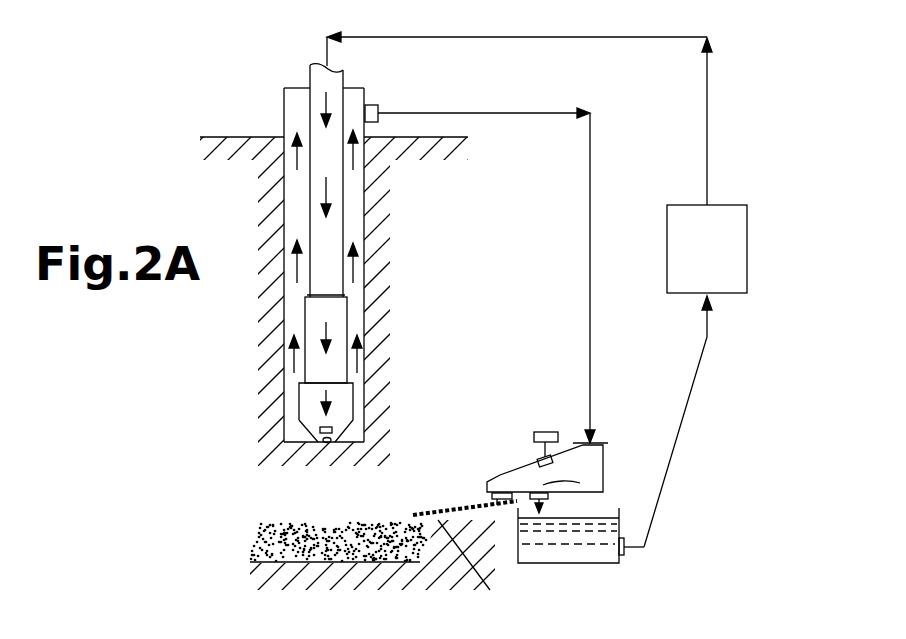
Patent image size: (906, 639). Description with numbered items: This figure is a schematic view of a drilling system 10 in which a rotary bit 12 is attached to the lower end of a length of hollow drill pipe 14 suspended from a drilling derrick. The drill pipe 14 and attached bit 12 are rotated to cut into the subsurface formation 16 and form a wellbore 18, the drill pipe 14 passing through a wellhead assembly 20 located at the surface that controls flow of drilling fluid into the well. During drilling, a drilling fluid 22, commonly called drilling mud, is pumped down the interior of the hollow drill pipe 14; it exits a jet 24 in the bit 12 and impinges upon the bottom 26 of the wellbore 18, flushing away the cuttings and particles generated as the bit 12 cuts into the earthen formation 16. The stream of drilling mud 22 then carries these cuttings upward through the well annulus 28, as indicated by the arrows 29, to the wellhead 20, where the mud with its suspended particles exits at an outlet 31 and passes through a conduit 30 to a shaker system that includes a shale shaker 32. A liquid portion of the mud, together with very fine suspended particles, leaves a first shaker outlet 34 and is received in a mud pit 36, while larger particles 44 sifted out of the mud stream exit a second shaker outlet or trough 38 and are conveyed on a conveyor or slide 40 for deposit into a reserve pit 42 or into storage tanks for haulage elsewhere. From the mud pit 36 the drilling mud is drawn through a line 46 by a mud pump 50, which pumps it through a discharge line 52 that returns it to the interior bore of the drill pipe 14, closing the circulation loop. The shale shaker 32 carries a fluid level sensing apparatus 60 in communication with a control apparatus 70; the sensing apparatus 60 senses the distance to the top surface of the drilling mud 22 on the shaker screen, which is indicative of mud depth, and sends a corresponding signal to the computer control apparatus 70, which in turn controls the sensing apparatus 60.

The drilling system 10 is at (352, 215).
The rotary bit 12 is at (342, 400).
The hollow drill pipe 14 is at (332, 284).
The subsurface formation 16 is at (256, 226).
The wellbore 18 is at (356, 235).
The wellhead assembly 20 is at (284, 112).
The drilling fluid 22 is at (327, 185).
The jet 24 is at (322, 428).
The bottom of the well bore 26 is at (330, 443).
The well annulus 28 is at (355, 312).
The arrows 29 is at (363, 355).
The conduit 30 is at (590, 193).
The outlet 31 is at (378, 107).
The shale shaker 32 is at (590, 467).
The first shaker outlet 34 is at (560, 495).
The mud pit 36 is at (597, 563).
The second shaker outlet or trough 38 is at (500, 478).
The conveyor or slide 40 is at (493, 500).
The reserve pit 42 is at (295, 560).
The larger particles 44 is at (422, 510).
The line 46 is at (697, 358).
The mud pump 50 is at (718, 245).
The discharge line 52 is at (637, 37).
The fluid level sensing apparatus 60 is at (540, 458).
The control apparatus 70 is at (548, 432).